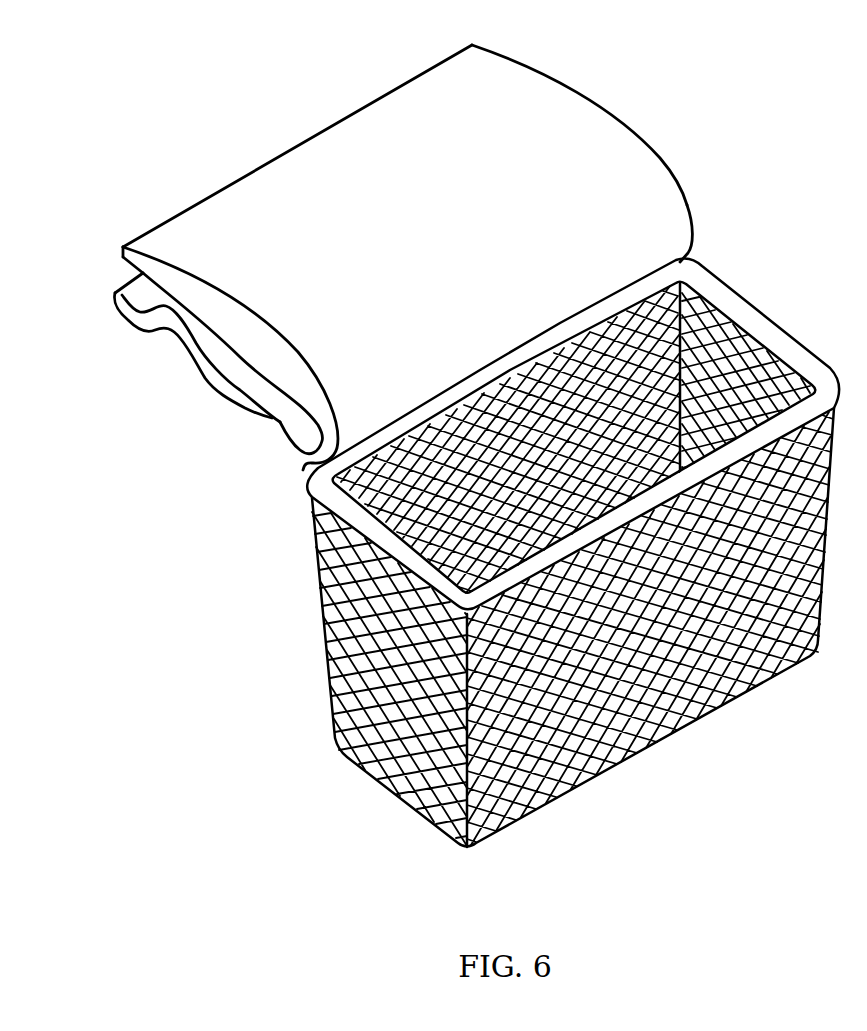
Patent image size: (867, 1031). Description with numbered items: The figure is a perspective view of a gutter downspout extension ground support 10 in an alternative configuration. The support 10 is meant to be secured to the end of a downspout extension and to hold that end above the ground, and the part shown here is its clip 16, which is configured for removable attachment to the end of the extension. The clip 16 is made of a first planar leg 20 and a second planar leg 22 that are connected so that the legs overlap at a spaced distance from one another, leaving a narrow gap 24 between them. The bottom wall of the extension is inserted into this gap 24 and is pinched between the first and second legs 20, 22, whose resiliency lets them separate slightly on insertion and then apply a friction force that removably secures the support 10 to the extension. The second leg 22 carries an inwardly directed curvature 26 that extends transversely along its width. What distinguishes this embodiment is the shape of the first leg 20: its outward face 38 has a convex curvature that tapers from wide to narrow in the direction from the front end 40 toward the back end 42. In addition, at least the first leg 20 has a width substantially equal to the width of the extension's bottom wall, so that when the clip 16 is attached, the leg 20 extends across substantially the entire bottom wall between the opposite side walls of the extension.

The gutter downspout extension ground support 10 is at (86, 148).
The clip 16 is at (627, 127).
The first planar leg 20 is at (247, 337).
The second planar leg 22 is at (282, 430).
The gap 24 is at (263, 387).
The inwardly directed curvature 26 is at (178, 331).
The outward face 38 is at (577, 143).
The front end 40 is at (657, 225).
The back end 42 is at (235, 181).